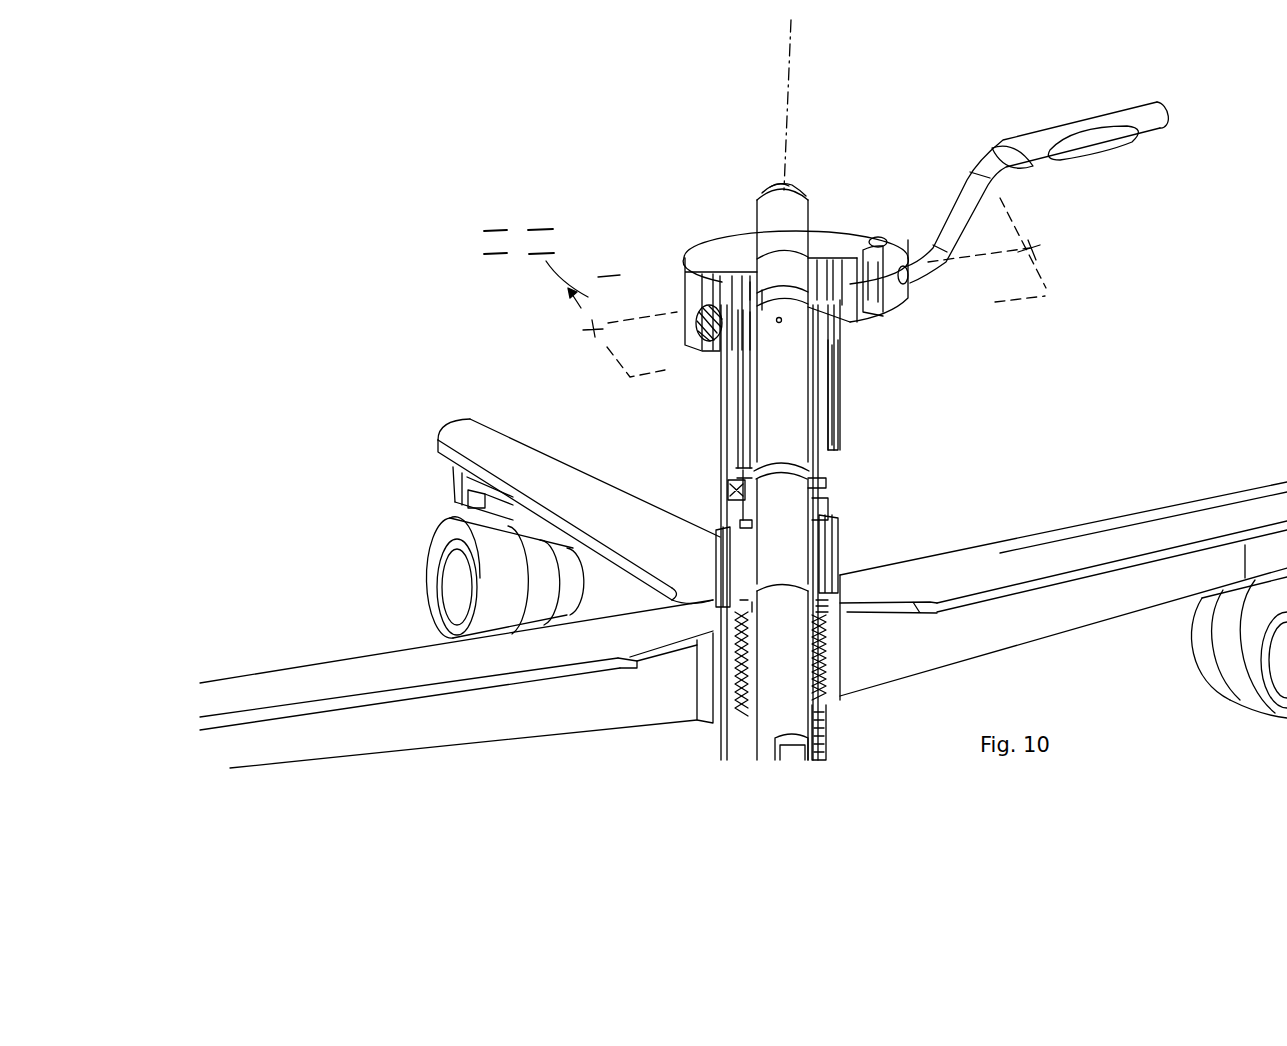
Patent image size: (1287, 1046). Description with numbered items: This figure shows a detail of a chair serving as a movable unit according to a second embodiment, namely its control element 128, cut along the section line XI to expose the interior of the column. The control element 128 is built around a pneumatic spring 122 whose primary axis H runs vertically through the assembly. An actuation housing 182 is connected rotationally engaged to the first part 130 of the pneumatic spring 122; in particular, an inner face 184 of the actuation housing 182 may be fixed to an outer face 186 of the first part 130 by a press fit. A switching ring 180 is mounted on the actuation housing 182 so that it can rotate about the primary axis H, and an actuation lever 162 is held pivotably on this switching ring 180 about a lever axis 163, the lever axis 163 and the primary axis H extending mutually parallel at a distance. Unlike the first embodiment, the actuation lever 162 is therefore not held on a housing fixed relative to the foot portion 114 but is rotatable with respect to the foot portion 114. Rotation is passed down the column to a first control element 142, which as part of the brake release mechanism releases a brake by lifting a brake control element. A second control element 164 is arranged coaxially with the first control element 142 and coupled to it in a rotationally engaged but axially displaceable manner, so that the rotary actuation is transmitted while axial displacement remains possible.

The primary axis H is at (794, 31).
The section line XI- XI is at (765, 287).
The control element 128 is at (600, 205).
The pneumatic spring 122 is at (812, 196).
The first part of the pneumatic spring 130 is at (770, 188).
The outer face 186 is at (757, 235).
The switching ring 180 is at (862, 236).
The actuation housing 182 is at (712, 268).
The inner face 184 is at (770, 276).
The lever axis 163 is at (882, 243).
The actuation lever 162 is at (1085, 132).
The second control element 164 is at (828, 400).
The first control element 142 is at (828, 552).
The foot portion 114 is at (540, 458).